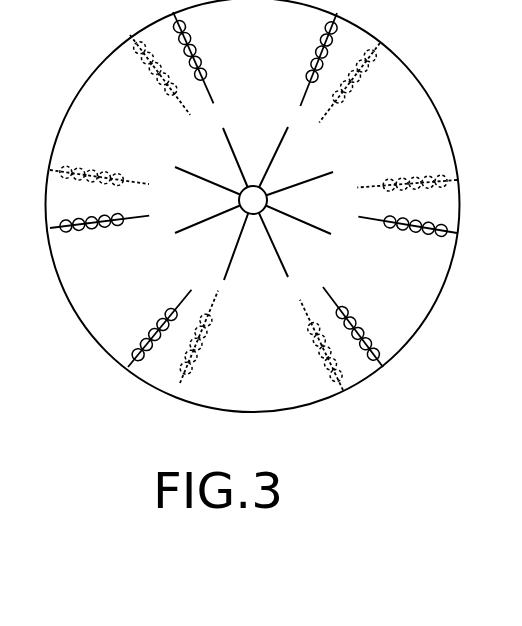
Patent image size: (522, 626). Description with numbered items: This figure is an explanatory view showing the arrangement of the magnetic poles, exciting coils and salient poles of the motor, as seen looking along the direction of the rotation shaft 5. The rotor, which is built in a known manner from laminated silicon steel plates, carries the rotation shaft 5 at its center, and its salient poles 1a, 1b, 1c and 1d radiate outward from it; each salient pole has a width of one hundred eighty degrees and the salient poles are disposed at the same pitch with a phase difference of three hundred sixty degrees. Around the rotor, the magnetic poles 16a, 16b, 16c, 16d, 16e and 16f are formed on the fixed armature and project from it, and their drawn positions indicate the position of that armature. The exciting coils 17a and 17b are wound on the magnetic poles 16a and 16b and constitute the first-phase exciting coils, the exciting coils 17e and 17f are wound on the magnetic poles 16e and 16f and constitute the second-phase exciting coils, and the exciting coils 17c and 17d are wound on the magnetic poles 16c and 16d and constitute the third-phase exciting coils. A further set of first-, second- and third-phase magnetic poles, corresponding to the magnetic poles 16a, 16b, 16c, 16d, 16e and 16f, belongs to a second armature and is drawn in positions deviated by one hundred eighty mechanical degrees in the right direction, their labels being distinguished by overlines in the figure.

The salient pole 1a is at (226, 131).
The salient pole 1b is at (284, 135).
The salient pole 1c is at (297, 184).
The salient pole 1d is at (300, 222).
The rotation shaft 5 is at (268, 198).
The magnetic pole 16a is at (208, 90).
The magnetic pole 16b is at (300, 106).
The magnetic pole 16c is at (370, 219).
The magnetic pole 16d is at (324, 288).
The magnetic pole 16e is at (193, 288).
The magnetic pole 16f is at (141, 218).
The exciting coil 17a is at (192, 34).
The exciting coil 17b is at (331, 27).
The exciting coil 17c is at (410, 232).
The exciting coil 17d is at (356, 323).
The exciting coil 17e is at (156, 318).
The exciting coil 17f is at (80, 232).